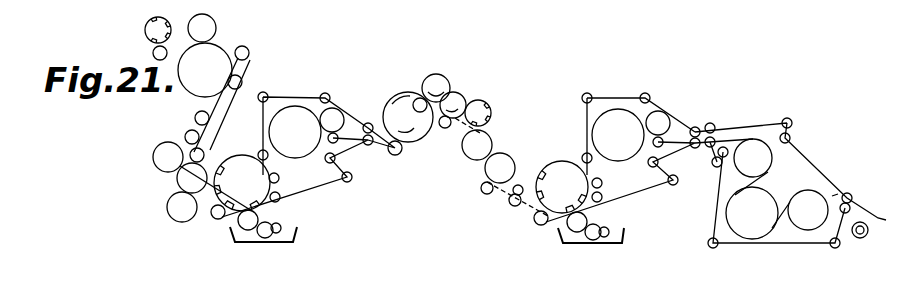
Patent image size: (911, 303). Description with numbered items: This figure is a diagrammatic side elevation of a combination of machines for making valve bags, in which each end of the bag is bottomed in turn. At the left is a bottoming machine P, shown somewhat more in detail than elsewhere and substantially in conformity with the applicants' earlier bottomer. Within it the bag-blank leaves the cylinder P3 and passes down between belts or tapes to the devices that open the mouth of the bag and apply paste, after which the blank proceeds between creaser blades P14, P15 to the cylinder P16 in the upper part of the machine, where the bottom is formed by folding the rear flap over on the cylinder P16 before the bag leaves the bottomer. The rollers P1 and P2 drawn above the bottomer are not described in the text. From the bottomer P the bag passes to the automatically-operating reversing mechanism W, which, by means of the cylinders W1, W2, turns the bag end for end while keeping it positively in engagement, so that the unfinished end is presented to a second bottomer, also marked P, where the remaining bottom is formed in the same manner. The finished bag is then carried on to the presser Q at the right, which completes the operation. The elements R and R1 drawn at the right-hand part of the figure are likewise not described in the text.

The feed roller P2 is at (146, 33).
The feed roller P1 is at (204, 29).
The cylinder P3 is at (230, 46).
The bottoming machine P is at (270, 83).
The cylinder P16 is at (295, 132).
The creaser blade P15 is at (280, 178).
The creaser blade P14 is at (292, 197).
The reversing mechanism W is at (412, 94).
The cylinder W1 is at (408, 117).
The cylinder W2 is at (441, 78).
The second printing unit R is at (576, 133).
The presser Q is at (762, 118).
The rewind roll R1 is at (875, 244).